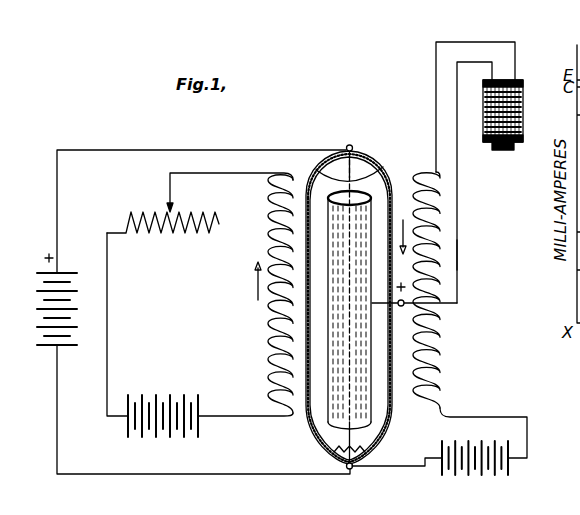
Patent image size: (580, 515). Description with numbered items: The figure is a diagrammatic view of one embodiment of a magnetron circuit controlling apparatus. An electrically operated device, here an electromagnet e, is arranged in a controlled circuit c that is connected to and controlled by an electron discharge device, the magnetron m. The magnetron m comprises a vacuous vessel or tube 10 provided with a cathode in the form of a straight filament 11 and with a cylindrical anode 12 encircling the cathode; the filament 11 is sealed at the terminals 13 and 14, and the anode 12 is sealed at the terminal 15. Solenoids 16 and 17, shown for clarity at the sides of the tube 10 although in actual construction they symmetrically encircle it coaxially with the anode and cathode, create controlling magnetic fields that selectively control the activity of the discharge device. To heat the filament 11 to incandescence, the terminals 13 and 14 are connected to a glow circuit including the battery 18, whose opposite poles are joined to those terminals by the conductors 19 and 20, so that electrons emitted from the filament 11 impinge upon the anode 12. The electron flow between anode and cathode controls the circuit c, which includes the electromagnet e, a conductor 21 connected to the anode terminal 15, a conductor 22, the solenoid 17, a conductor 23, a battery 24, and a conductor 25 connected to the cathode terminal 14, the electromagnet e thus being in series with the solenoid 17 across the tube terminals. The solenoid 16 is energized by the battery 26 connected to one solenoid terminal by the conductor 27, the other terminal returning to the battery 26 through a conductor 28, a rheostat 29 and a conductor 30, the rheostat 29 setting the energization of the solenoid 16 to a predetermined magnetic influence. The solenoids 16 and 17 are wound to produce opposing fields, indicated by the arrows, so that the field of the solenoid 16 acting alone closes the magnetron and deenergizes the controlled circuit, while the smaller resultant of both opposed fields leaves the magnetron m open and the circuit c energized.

The vacuous vessel or tube 10 is at (384, 180).
The straight filament 11 is at (318, 169).
The cylindrical anode 12 is at (330, 416).
The terminal 13 is at (351, 145).
The terminal 14 is at (352, 470).
The terminal 15 is at (402, 308).
The solenoid 16 is at (267, 330).
The solenoid 17 is at (441, 330).
The battery or other source of energy 18 is at (38, 309).
The conductor 19 is at (228, 149).
The conductor 20 is at (190, 475).
The conductor 21 is at (458, 275).
The conductor 22 is at (469, 42).
The conductor 23 is at (494, 416).
The battery 24 is at (480, 476).
The conductor 25 is at (405, 467).
The battery or other source of energy 26 is at (168, 394).
The conductor 27 is at (222, 414).
The conductor 28 is at (222, 176).
The rheostat 29 is at (170, 234).
The conductor 30 is at (108, 344).
The magnetron m is at (366, 164).
The controlled circuit c is at (458, 262).
The electromagnet e is at (523, 126).